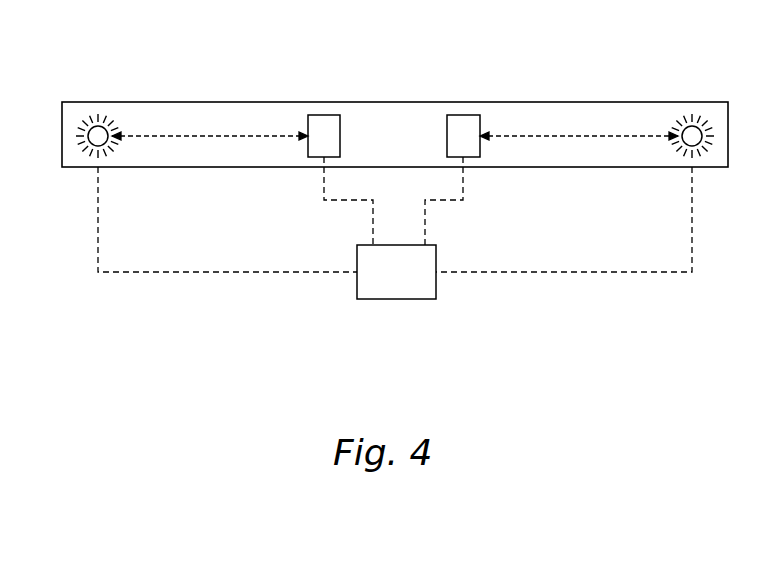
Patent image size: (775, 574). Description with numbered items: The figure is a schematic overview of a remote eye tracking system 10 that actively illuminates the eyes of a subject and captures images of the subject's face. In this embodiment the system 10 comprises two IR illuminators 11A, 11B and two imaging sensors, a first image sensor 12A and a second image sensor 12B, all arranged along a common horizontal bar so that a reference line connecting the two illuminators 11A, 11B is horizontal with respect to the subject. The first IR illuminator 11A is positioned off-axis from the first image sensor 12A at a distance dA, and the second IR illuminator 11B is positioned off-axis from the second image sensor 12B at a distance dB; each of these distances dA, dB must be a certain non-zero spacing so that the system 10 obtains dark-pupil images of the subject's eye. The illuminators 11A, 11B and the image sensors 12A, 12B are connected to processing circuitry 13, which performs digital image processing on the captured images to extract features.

The remote eye tracking system 10 is at (125, 302).
The first IR illuminator 11A is at (100, 122).
The second IR illuminator 11B is at (693, 122).
The first image sensor 12A is at (327, 115).
The second image sensor 12B is at (463, 115).
The processing circuitry 13 is at (436, 295).
The distance between first IR illuminator and first image sensor dA is at (198, 135).
The distance between second IR illuminator and second image sensor dB is at (587, 135).